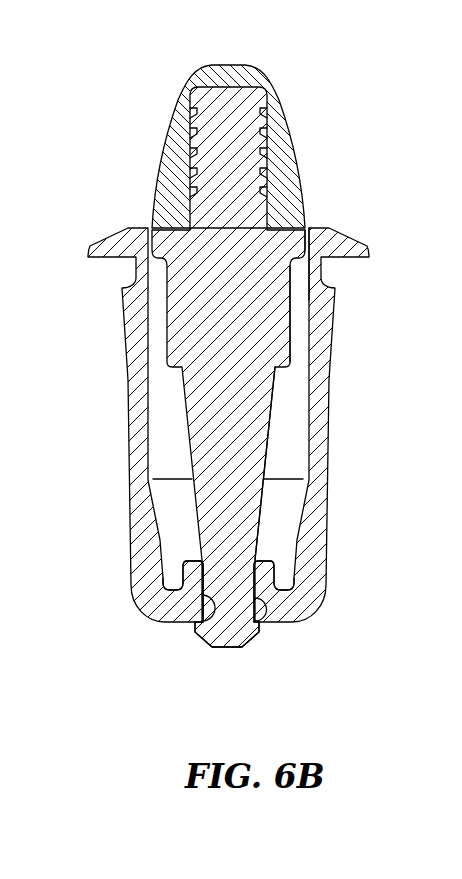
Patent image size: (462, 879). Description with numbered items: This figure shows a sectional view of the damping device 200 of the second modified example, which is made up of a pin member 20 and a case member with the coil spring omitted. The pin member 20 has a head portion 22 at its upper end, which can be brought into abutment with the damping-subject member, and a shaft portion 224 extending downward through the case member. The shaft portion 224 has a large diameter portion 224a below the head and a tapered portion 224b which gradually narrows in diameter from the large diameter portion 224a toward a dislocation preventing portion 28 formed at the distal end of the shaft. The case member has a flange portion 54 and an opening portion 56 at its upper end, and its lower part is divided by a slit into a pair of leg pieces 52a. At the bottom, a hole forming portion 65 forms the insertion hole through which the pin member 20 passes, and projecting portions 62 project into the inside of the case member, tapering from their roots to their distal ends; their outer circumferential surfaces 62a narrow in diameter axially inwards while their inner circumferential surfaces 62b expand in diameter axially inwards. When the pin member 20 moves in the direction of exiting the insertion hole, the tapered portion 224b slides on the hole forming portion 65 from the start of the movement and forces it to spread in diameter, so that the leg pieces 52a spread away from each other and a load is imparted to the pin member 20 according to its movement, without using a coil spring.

The pin member 20 is at (237, 378).
The head portion 22 is at (226, 67).
The dislocation preventing portion 28 is at (224, 649).
The leg pieces 52a is at (147, 577).
The flange portion 54 is at (369, 246).
The opening portion 56 is at (306, 227).
The projecting portions 62 is at (190, 580).
The outer circumferential surfaces 62a is at (140, 588).
The inner circumferential surfaces 62b is at (200, 592).
The hole forming portion 65 is at (256, 602).
The damping device 200 is at (237, 432).
The shaft portion 224 is at (243, 445).
The large diameter portion 224a is at (277, 318).
The tapered portion 224b is at (272, 407).